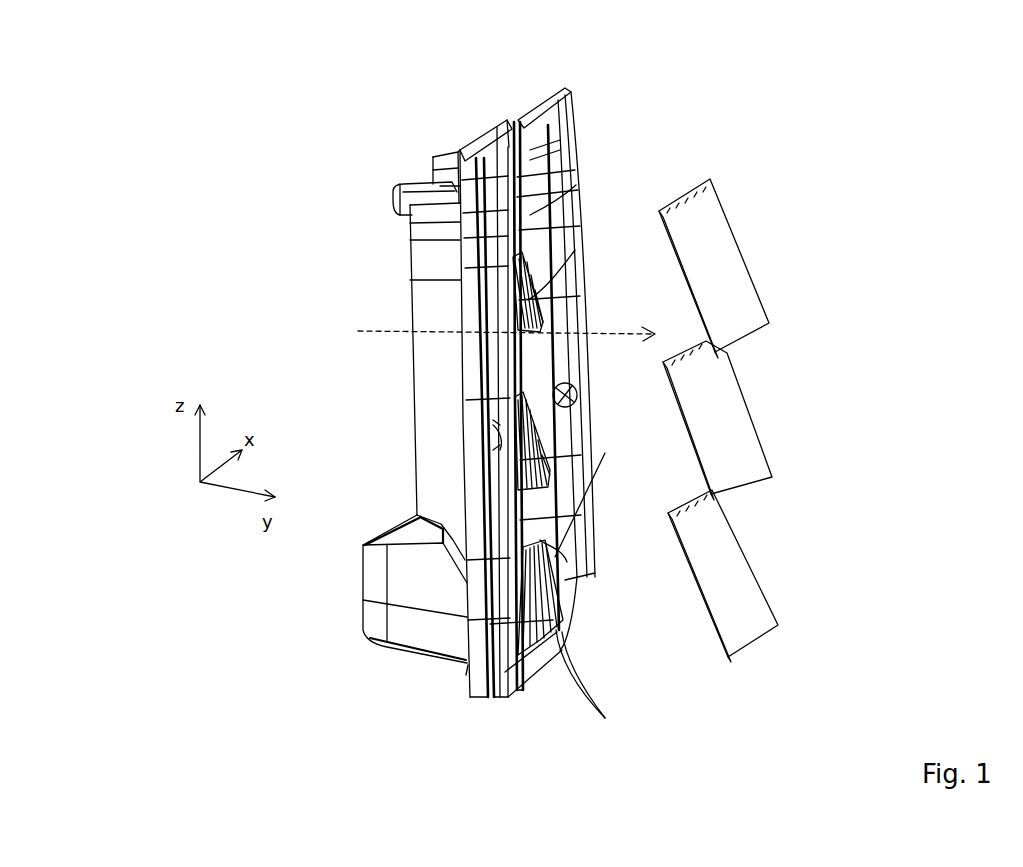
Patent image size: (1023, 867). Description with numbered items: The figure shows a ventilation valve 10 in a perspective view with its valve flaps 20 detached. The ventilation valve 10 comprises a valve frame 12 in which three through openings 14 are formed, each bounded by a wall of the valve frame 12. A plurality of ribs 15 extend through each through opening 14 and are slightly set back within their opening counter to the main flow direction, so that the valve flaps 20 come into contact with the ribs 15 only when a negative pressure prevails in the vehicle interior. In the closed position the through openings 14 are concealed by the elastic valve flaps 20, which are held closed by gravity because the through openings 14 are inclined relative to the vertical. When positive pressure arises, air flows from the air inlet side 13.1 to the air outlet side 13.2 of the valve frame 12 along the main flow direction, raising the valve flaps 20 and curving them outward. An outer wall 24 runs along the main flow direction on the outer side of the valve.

The ventilation valve 10 is at (830, 155).
The valve frame 12 is at (442, 188).
The air inlet side 13.1 is at (396, 397).
The air outlet side 13.2 is at (605, 547).
The through openings 14 is at (552, 620).
The ribs 15 is at (599, 689).
The valve flaps 20 is at (740, 595).
The outer wall 24 is at (540, 217).